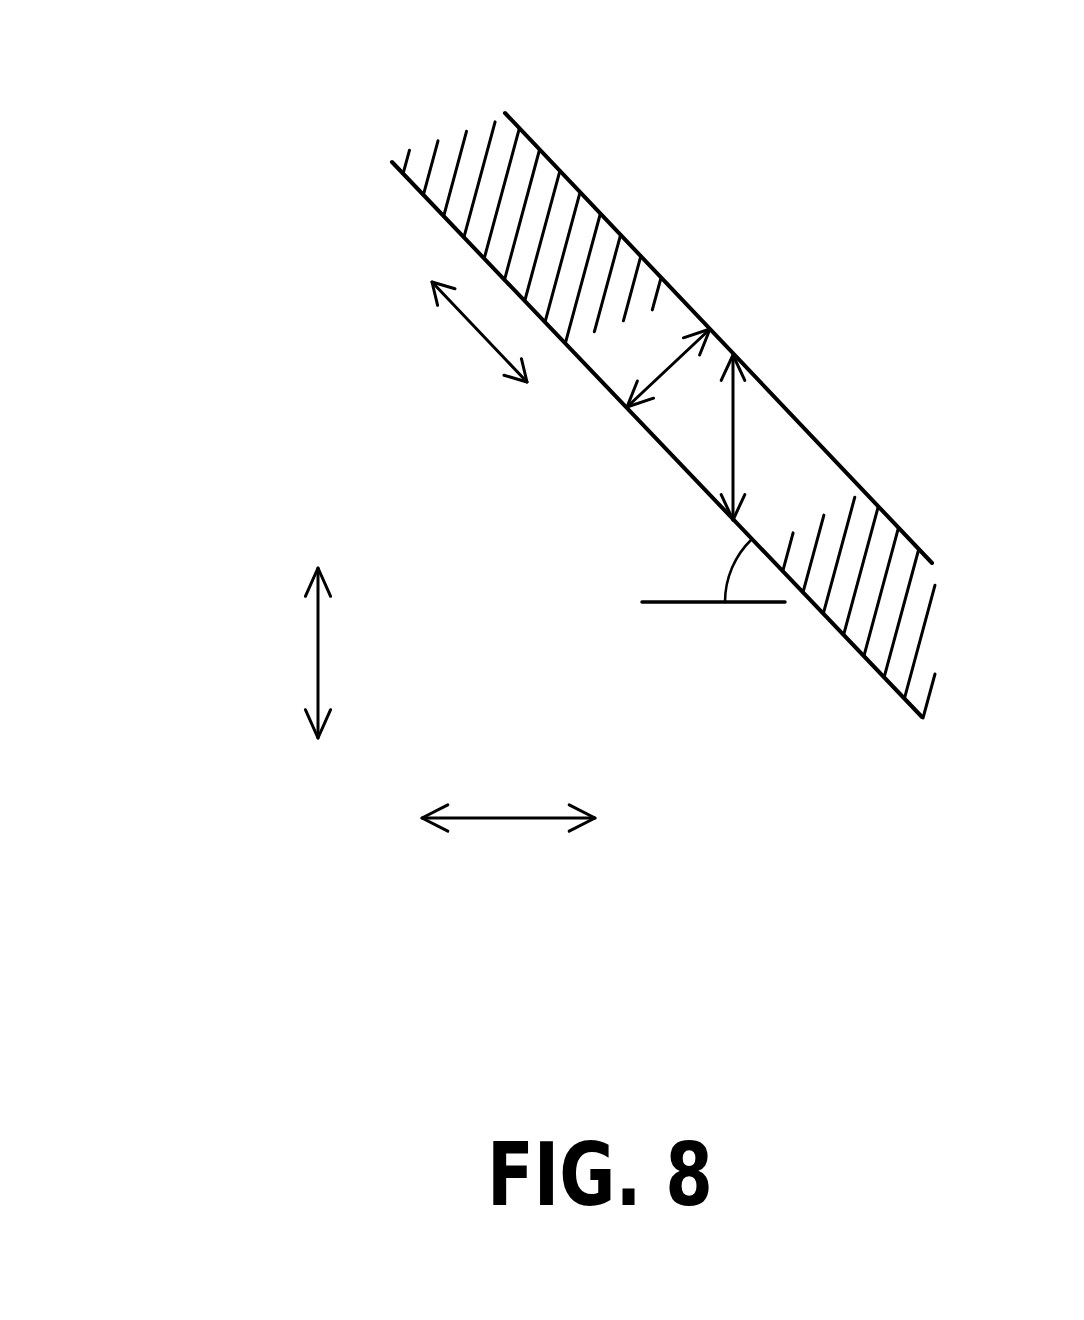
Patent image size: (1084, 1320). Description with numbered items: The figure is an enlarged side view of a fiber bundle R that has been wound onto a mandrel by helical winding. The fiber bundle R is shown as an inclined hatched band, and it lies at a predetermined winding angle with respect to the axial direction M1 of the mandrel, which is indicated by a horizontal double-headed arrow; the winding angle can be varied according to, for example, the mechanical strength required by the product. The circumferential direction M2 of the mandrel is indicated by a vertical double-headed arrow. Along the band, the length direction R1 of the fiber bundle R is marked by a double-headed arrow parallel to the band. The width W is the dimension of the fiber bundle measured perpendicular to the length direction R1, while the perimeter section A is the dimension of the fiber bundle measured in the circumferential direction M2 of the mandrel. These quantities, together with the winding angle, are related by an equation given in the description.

The fiber bundle R is at (513, 175).
The width of the fiber bundle W is at (670, 365).
The perimeter section of the fiber bundle A is at (735, 425).
The length direction of the fiber bundle R1 is at (477, 330).
The circumferential direction of the mandrel M2 is at (318, 652).
The axial direction of the mandrel M1 is at (507, 818).